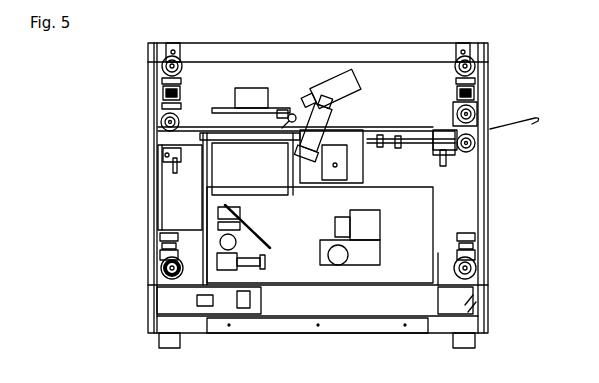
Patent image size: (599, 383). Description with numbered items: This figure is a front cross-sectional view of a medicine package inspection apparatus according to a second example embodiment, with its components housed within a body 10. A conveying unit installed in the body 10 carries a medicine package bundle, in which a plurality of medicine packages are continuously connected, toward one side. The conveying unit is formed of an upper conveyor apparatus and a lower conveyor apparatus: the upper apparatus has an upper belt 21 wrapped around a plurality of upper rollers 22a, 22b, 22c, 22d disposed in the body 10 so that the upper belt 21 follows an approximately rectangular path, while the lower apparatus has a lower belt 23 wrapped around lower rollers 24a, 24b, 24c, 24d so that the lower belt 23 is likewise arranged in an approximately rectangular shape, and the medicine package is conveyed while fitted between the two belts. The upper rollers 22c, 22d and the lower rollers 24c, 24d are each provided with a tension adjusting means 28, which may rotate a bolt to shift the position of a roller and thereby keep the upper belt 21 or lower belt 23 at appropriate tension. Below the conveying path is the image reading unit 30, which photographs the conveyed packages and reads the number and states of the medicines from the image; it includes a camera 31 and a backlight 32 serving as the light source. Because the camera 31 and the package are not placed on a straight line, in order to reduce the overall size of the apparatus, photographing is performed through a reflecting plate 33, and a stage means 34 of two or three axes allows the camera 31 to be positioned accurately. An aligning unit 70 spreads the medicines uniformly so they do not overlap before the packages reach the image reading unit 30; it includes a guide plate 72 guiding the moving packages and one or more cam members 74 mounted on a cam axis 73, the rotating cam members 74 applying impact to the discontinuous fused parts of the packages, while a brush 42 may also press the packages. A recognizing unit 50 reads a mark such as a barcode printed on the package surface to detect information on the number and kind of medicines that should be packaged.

The body 10 is at (148, 294).
The upper belt 21 is at (160, 89).
The upper roller 22a is at (478, 104).
The upper roller 22b is at (160, 122).
The upper roller 22c is at (168, 63).
The upper roller 22d is at (472, 62).
The lower belt 23 is at (157, 197).
The lower roller 24a is at (478, 150).
The lower roller 24b is at (163, 150).
The lower roller 24c is at (160, 266).
The lower roller 24d is at (478, 268).
The tension adjusting means 28 is at (478, 233).
The image reading unit 30 is at (340, 295).
The camera 31 is at (385, 225).
The backlight 32 is at (248, 90).
The reflecting plate 33 is at (270, 245).
The stage means 34 is at (300, 266).
The brush 42 is at (285, 116).
The recognizing unit 50 is at (348, 78).
The aligning unit 70 is at (415, 110).
The guide plate 72 is at (523, 135).
The cam axis 73 is at (440, 130).
The cam member 74 is at (393, 130).